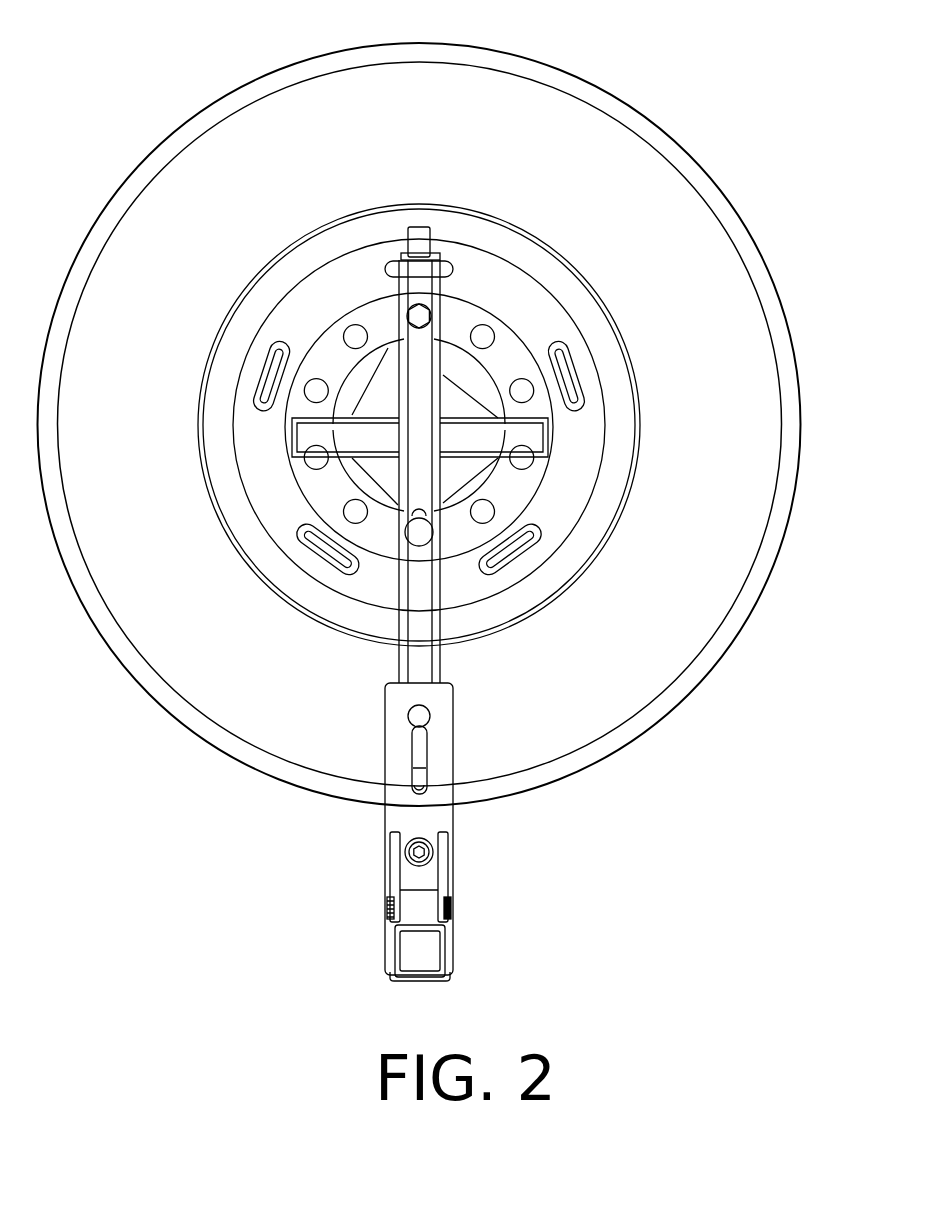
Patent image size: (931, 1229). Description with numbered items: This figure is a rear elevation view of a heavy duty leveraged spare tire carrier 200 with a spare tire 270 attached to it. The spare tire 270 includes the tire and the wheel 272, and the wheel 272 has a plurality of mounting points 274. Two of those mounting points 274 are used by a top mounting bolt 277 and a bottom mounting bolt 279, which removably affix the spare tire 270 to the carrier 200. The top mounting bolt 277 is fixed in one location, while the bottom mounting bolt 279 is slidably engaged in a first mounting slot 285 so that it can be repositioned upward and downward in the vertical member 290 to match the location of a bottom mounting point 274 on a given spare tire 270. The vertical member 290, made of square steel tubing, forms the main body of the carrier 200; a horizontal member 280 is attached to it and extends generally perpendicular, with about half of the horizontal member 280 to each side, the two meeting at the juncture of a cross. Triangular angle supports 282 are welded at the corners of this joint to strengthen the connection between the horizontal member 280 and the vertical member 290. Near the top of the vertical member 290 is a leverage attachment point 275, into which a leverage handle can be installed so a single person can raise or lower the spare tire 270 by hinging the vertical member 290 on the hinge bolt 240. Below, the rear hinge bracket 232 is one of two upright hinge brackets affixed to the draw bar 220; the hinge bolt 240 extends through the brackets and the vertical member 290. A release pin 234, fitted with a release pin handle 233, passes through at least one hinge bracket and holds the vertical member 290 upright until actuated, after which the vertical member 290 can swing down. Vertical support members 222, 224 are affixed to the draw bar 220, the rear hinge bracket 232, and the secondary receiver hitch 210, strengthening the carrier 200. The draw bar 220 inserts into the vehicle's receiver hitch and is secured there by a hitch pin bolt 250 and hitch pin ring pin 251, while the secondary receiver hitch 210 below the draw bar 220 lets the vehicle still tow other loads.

The heavy duty leveraged spare tire carrier 200 is at (432, 574).
The secondary receiver hitch 210 is at (443, 977).
The draw bar 220 is at (410, 921).
The vertical support member 222 is at (446, 853).
The vertical support member 224 is at (393, 869).
The rear hinge bracket 232 is at (445, 821).
The release pin handle 233 is at (427, 754).
The release pin 234 is at (431, 713).
The hinge bolt 240 is at (406, 855).
The hitch pin bolt 250 is at (391, 910).
The hitch pin ring pin 251 is at (448, 898).
The spare tire 270 is at (186, 66).
The wheel 272 is at (472, 268).
The mounting points 274 is at (348, 330).
The leverage attachment point 275 is at (419, 227).
The top mounting bolt 277 is at (424, 312).
The bottom mounting bolt 279 is at (405, 535).
The horizontal member 280 is at (313, 442).
The angle supports 282 is at (388, 402).
The first mounting slot 285 is at (425, 512).
The vertical member 290 is at (412, 658).